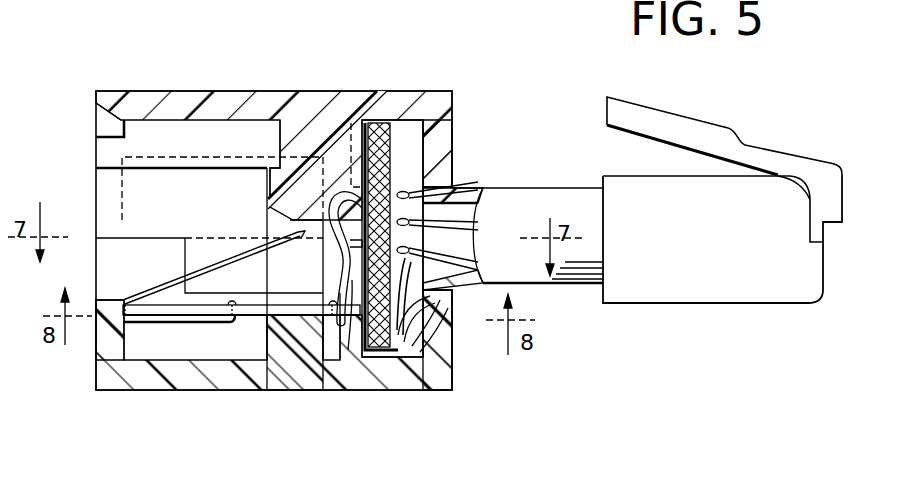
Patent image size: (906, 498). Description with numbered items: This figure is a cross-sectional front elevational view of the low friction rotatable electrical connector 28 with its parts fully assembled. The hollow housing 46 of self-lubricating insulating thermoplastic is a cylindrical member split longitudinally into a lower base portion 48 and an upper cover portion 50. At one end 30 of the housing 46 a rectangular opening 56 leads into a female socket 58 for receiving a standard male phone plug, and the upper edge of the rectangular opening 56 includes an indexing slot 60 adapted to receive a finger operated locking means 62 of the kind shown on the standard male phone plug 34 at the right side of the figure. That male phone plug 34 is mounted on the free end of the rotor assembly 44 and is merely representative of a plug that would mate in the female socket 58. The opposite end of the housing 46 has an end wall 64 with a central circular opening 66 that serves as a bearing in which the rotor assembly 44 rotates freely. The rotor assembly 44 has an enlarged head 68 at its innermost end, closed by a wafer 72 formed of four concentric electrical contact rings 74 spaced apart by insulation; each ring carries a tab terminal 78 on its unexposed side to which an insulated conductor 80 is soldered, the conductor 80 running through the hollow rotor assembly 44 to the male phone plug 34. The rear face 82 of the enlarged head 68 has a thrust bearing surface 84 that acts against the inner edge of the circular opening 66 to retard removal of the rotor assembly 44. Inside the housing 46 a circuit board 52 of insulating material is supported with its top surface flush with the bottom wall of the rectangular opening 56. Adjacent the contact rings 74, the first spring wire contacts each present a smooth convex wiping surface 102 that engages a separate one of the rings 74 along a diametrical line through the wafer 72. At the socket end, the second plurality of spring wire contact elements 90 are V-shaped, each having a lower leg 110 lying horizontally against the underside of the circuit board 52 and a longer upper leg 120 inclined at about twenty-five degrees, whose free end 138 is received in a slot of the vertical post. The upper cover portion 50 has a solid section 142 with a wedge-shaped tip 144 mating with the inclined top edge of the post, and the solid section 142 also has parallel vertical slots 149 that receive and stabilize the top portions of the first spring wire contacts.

The low friction rotatable electrical connector 28 is at (187, 84).
The one end of the housing 30 is at (96, 392).
The standard male phone plug 34 is at (718, 284).
The rotor assembly 44 is at (537, 176).
The hollow housing 46 is at (237, 84).
The lower base portion 48 is at (128, 392).
The upper cover portion 50 is at (282, 91).
The circuit board 52 is at (258, 318).
The rectangular opening 56 is at (96, 183).
The female socket 58 is at (137, 284).
The indexing slot 60 is at (106, 118).
The finger operated locking means 62 is at (700, 131).
The end wall 64 is at (453, 103).
The central circular opening 66 is at (458, 187).
The enlarged head 68 is at (441, 305).
The wafer 72 is at (364, 350).
The concentric electrical contact rings 74 is at (385, 342).
The tab terminal 78 is at (427, 387).
The insulated conductor 80 is at (451, 220).
The rear face 82 is at (452, 355).
The thrust bearing surface 84 is at (453, 301).
The second plurality of spring wire contact elements 90 is at (205, 256).
The smooth convex wiping surface 102 is at (357, 315).
The lower leg 110 is at (180, 323).
The upper leg 120 is at (157, 283).
The free end of the upper leg 138 is at (304, 233).
The solid section 142 is at (328, 135).
The wedge-shaped tip 144 is at (272, 225).
The parallel vertical slots 149 is at (351, 123).